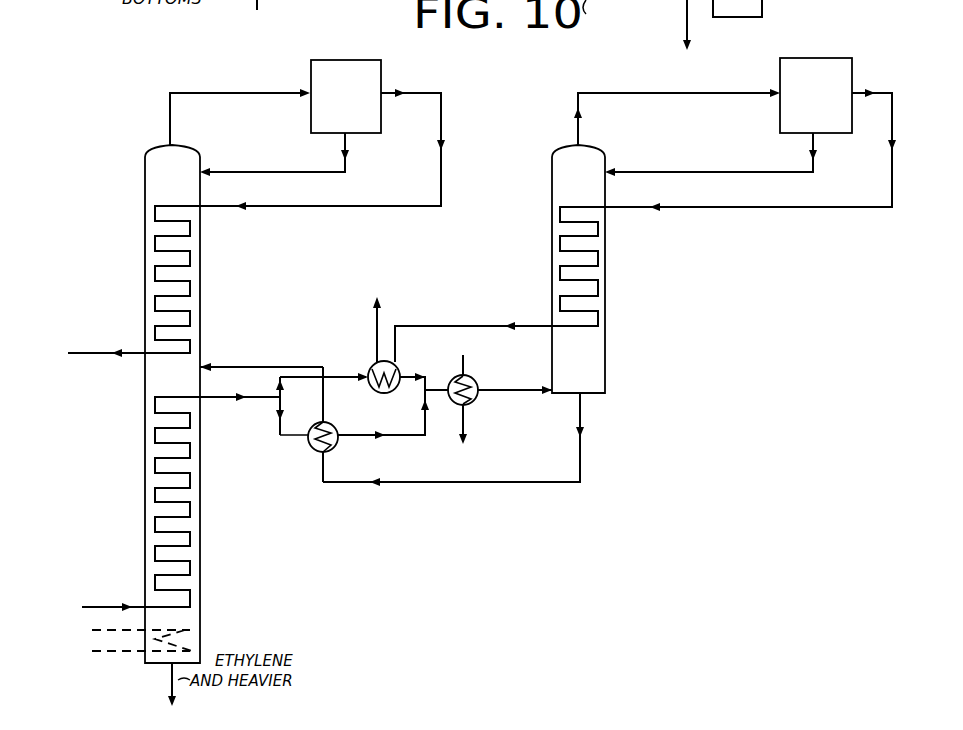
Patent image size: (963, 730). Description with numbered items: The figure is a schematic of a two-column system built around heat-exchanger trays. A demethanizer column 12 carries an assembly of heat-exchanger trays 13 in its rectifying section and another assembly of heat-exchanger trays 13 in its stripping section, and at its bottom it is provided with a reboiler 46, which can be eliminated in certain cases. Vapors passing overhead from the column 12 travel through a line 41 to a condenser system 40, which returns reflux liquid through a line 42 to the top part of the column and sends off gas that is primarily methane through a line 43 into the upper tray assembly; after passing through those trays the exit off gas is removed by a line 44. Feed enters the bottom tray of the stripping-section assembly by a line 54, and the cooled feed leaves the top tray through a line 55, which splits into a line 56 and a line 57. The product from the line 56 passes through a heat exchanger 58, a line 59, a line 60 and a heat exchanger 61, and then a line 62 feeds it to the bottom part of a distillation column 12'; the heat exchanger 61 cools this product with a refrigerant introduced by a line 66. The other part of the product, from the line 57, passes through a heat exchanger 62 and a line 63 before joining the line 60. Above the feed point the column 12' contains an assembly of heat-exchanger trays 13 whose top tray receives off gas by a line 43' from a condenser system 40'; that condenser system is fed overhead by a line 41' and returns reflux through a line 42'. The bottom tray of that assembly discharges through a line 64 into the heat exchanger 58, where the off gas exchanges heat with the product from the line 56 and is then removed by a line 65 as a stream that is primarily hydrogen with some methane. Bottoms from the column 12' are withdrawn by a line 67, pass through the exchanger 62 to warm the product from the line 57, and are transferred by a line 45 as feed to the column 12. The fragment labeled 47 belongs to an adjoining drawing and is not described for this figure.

The demethanizer column 12 is at (131, 386).
The distillation column 12' is at (555, 251).
The heat-exchanger trays 13 is at (156, 258).
The condenser system 40 is at (346, 82).
The condenser system 40' is at (822, 81).
The line 41 is at (240, 106).
The line 41' is at (677, 107).
The line 42 is at (301, 154).
The line 42' is at (711, 154).
The line 43 is at (322, 171).
The line 43' is at (750, 169).
The line 44 is at (98, 358).
The line 45 is at (252, 342).
The reboiler 46 is at (92, 660).
The line 47 is at (688, 4).
The line 54 is at (105, 600).
The line 55 is at (240, 400).
The line 56 is at (337, 376).
The line 57 is at (297, 449).
The heat exchanger 58 is at (369, 364).
The line 59 is at (405, 375).
The line 60 is at (432, 388).
The heat exchanger 61 is at (474, 378).
The line 62 is at (501, 395).
The line 63 is at (406, 433).
The line 64 is at (476, 326).
The line 65 is at (381, 318).
The line 66 is at (463, 357).
The line 67 is at (447, 485).